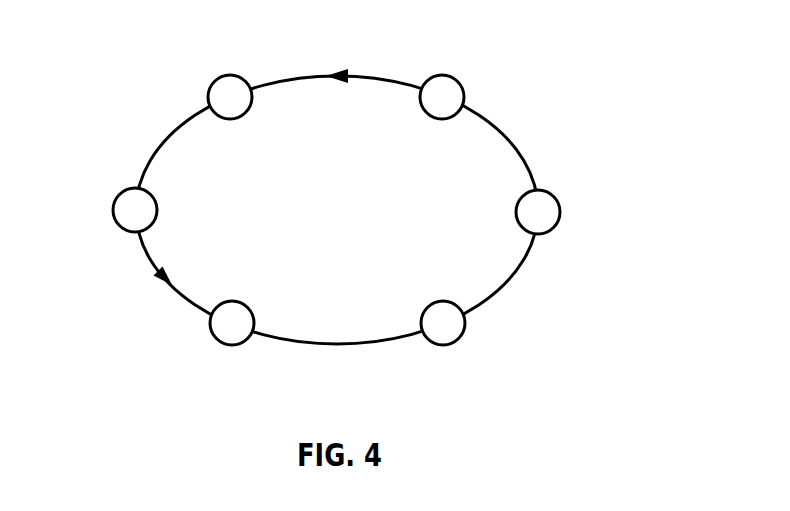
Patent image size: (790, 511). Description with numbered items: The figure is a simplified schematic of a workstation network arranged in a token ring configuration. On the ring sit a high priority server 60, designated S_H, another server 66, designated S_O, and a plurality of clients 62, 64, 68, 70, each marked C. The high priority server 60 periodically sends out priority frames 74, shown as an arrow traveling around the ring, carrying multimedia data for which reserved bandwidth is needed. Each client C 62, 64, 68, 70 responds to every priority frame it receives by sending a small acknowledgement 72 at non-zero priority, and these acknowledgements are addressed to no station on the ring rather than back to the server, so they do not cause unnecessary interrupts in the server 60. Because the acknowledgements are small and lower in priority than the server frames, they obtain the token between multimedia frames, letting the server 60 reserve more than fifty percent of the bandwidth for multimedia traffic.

The high priority server 60 is at (127, 188).
The client 62 is at (240, 344).
The client 64 is at (438, 344).
The server 66 is at (560, 213).
The client 68 is at (452, 75).
The client 70 is at (228, 75).
The acknowledgement 72 is at (368, 75).
The priority frame 74 is at (153, 272).